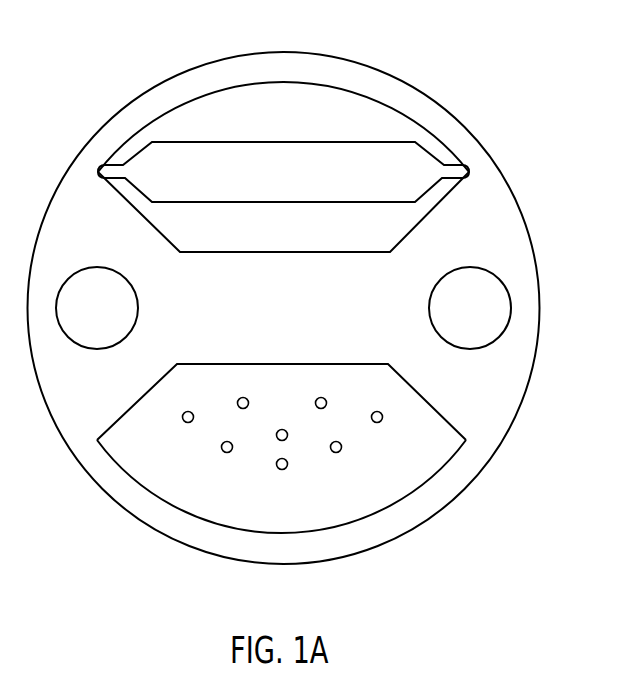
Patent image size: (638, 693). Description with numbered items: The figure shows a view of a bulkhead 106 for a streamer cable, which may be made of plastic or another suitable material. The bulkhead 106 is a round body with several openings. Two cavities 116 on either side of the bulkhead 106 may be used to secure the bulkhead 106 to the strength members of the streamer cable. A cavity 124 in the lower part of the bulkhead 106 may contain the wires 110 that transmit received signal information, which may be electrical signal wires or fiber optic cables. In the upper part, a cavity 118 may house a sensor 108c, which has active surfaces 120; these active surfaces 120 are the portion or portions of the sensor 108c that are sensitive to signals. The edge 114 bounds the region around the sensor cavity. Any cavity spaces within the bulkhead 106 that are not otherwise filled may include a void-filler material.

The bulkhead 106 is at (398, 74).
The sensor 108c is at (252, 110).
The wires 110 is at (345, 342).
The inner arcuate edge 114 is at (425, 127).
The cavities 116 is at (94, 266).
The cavity 118 is at (235, 48).
The active surfaces 120 is at (342, 122).
The cavity 124 is at (478, 512).